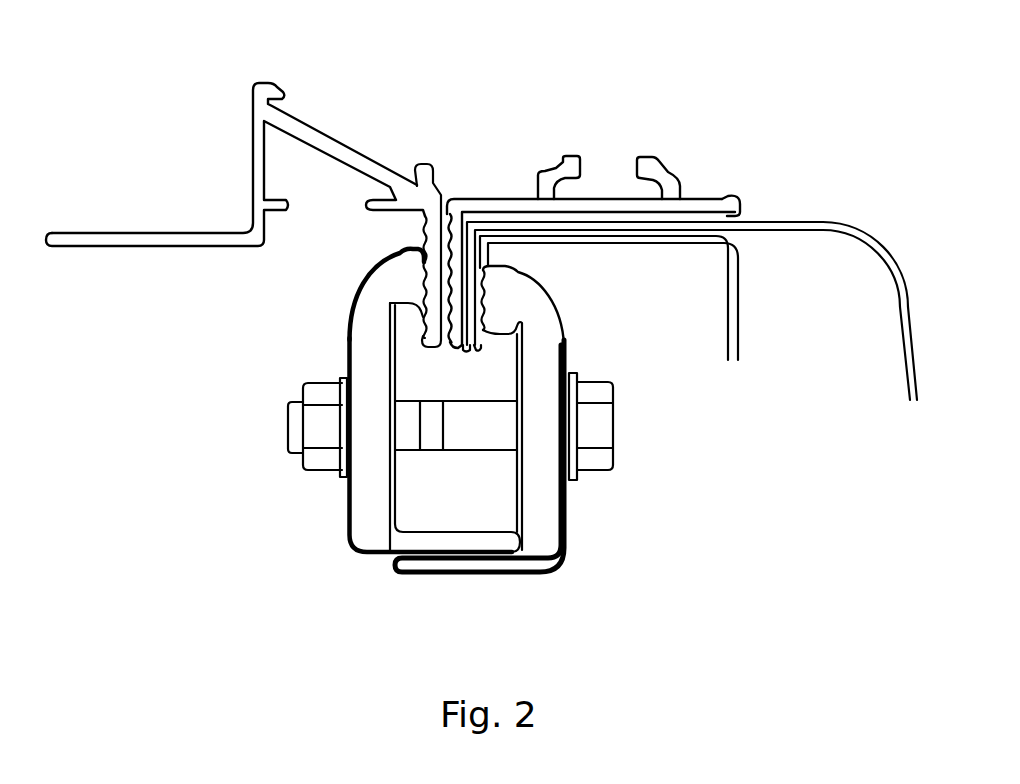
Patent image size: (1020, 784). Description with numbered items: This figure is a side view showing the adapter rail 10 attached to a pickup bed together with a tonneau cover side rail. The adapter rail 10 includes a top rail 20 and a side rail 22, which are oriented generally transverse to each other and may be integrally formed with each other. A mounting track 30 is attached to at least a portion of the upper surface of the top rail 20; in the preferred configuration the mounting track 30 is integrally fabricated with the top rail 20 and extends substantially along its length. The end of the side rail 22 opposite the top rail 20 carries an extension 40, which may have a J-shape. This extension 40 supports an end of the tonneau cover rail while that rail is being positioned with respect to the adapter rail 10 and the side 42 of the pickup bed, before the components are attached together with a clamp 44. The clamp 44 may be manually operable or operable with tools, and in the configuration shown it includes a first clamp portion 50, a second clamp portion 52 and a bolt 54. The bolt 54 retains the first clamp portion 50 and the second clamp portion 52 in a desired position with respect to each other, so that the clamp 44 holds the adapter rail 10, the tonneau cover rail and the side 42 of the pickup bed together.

The adapter rail 10 is at (486, 126).
The top rail 20 is at (730, 202).
The side rail 22 is at (455, 265).
The mounting track 30 is at (673, 180).
The extension 40 is at (437, 347).
The side of the pickup bed 42 is at (648, 234).
The clamp 44 is at (367, 532).
The first clamp portion 50 is at (553, 524).
The second clamp portion 52 is at (358, 333).
The bolt 54 is at (605, 422).